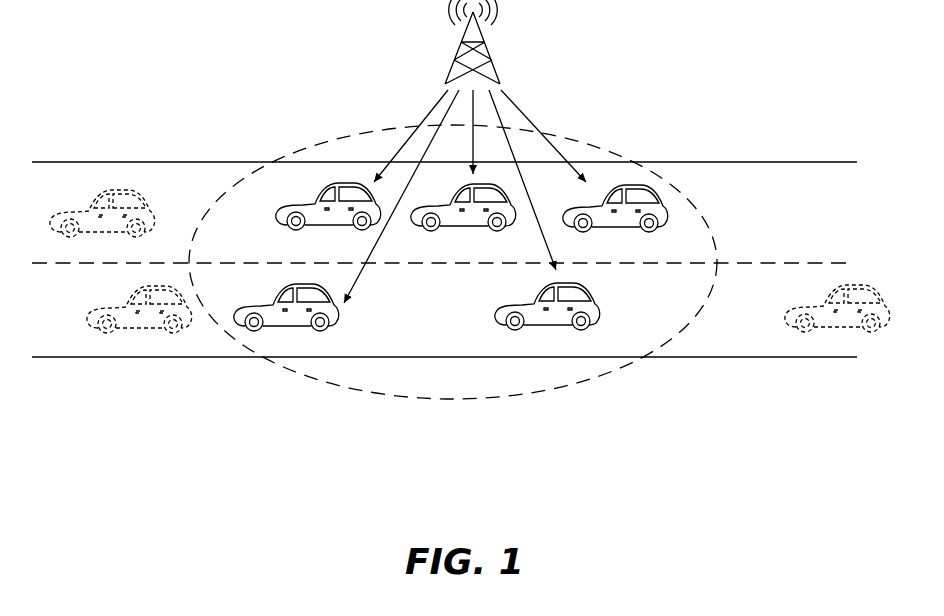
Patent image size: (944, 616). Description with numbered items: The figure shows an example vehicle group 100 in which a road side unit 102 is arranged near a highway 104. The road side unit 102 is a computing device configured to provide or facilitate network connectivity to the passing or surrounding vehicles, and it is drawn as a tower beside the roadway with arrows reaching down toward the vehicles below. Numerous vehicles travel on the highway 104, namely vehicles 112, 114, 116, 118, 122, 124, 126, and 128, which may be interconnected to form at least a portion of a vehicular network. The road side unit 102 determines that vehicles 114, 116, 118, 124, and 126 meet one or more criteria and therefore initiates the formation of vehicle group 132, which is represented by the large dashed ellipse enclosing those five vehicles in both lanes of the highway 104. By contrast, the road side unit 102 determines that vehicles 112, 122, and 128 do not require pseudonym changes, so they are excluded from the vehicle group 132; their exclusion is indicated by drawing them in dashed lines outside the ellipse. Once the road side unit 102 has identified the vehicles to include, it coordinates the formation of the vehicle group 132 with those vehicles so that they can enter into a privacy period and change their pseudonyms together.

The vehicle group 100 is at (461, 261).
The road side unit (RSU) 102 is at (490, 42).
The highway 104 is at (444, 249).
The vehicle 112 is at (102, 221).
The vehicle 114 is at (328, 216).
The vehicle 116 is at (463, 217).
The vehicle 118 is at (615, 217).
The vehicle 122 is at (139, 318).
The vehicle 124 is at (286, 316).
The vehicle 126 is at (547, 316).
The vehicle 128 is at (837, 318).
The vehicle group 132 is at (453, 260).